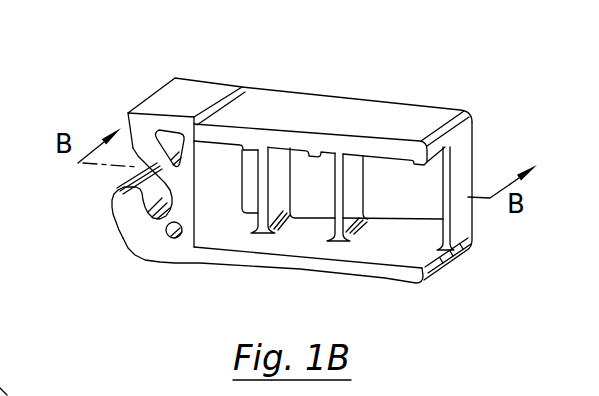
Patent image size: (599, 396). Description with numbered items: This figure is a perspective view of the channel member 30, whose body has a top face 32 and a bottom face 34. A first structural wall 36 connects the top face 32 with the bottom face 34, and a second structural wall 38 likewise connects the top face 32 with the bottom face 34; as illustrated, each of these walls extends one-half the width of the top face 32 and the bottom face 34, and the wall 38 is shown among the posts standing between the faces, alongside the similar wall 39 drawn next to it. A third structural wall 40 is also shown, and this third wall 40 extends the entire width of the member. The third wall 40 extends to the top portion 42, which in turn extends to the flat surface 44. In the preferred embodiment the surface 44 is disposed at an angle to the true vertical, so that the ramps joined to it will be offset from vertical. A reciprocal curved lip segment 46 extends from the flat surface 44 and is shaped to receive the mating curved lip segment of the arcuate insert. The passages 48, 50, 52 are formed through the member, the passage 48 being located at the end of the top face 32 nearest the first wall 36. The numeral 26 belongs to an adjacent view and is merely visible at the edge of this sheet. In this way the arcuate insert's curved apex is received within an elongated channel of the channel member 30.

The adjacent figure element 26 is at (50, 395).
The channel member 30 is at (170, 295).
The top face 32 is at (340, 115).
The bottom face 34 is at (368, 278).
The first structural wall 36 is at (455, 226).
The second structural wall 38 is at (345, 173).
The post 39 is at (281, 198).
The third structural wall 40 is at (203, 188).
The top portion 42 is at (188, 93).
The flat surface 44 is at (127, 122).
The reciprocal curved lip segment 46 is at (136, 185).
The passage 48 is at (407, 177).
The passage 50 is at (310, 187).
The passage 52 is at (243, 167).